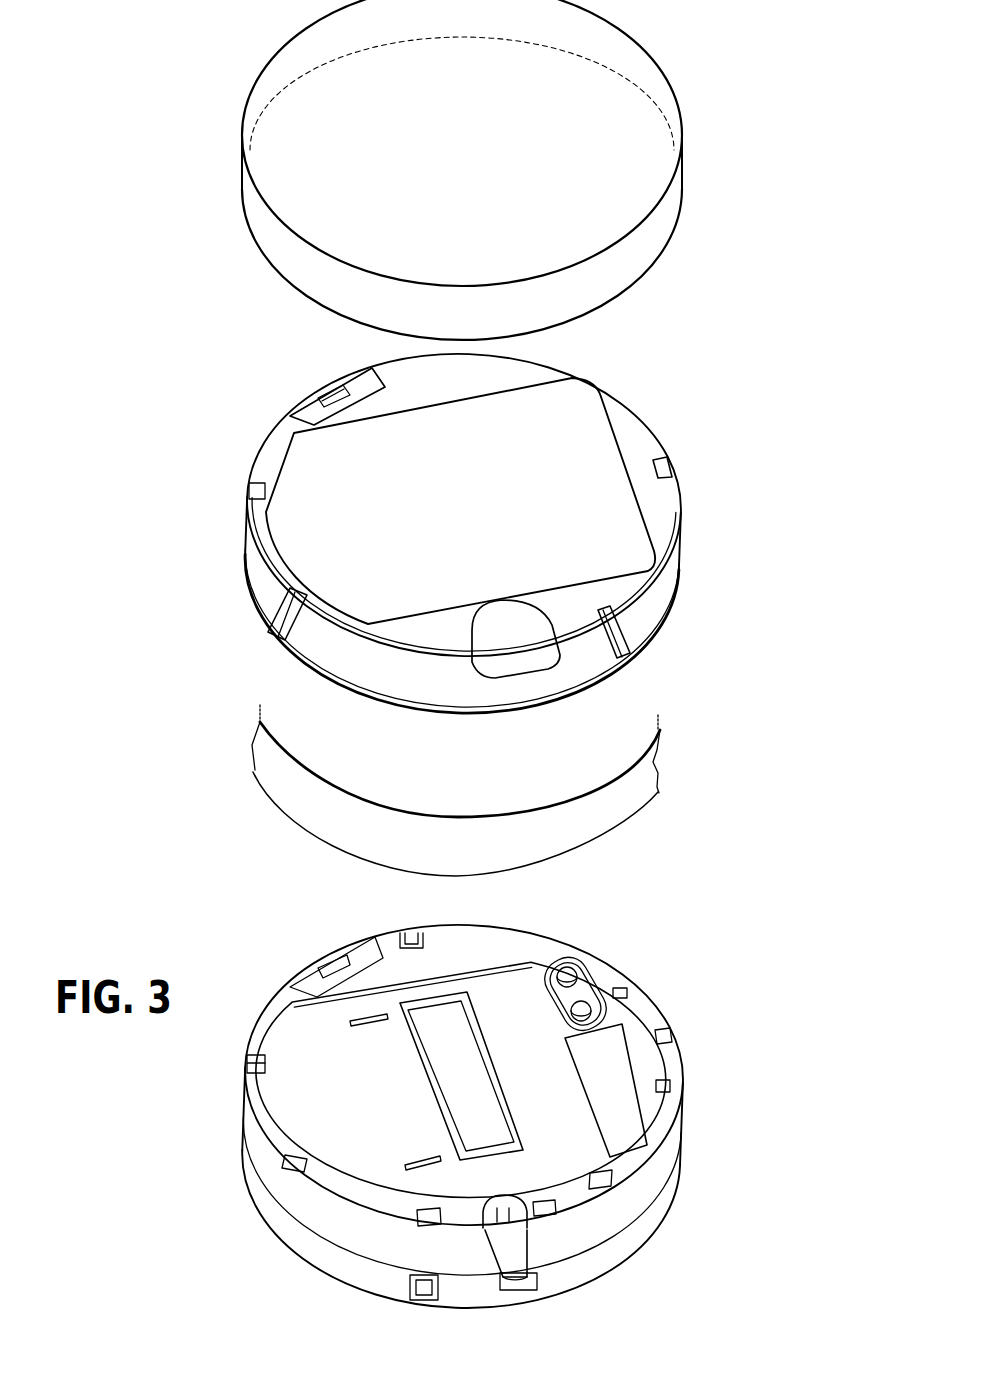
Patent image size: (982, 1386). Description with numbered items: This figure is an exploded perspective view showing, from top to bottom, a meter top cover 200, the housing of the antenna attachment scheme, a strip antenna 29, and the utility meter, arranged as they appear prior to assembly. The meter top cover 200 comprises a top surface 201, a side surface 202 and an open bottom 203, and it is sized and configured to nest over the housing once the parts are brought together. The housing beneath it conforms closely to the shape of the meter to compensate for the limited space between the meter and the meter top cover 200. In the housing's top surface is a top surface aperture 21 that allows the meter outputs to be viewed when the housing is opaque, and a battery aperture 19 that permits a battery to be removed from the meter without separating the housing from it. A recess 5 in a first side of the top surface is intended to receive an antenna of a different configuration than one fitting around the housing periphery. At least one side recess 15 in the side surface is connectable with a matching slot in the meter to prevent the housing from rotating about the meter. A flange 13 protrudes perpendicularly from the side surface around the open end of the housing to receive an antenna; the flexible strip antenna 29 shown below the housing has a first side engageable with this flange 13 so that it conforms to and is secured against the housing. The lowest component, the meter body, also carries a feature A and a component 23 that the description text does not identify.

The meter top cover 200 is at (474, 170).
The top surface 201 is at (612, 52).
The side surface 202 is at (667, 205).
The open bottom 203 is at (648, 275).
The flange 13 is at (342, 690).
The top surface aperture 21 is at (423, 508).
The battery aperture 19 is at (522, 655).
The side recess 15 is at (280, 640).
The recess 5 is at (362, 378).
The strip antenna 29 is at (560, 828).
The upper housing portion A is at (310, 1192).
The base housing 23 is at (617, 1253).